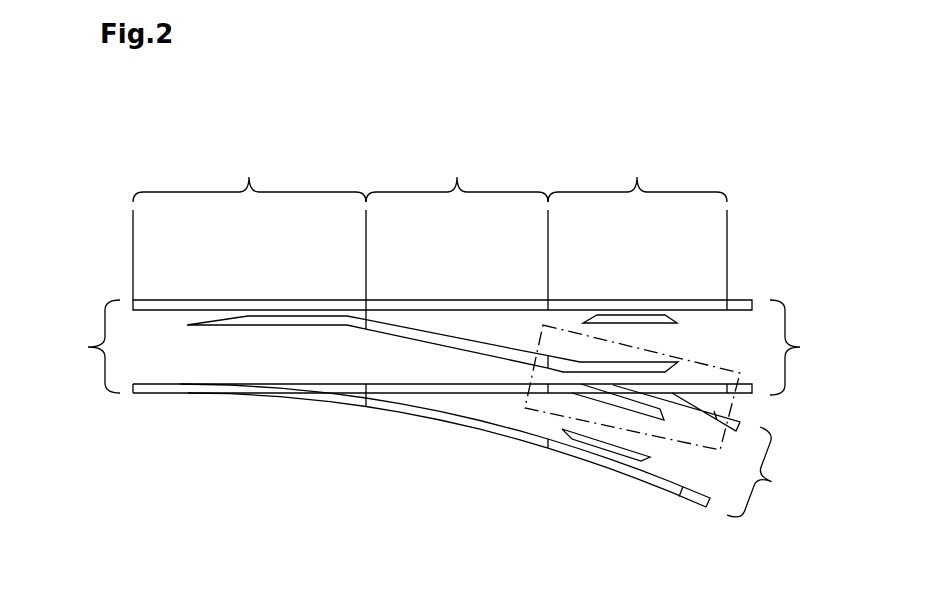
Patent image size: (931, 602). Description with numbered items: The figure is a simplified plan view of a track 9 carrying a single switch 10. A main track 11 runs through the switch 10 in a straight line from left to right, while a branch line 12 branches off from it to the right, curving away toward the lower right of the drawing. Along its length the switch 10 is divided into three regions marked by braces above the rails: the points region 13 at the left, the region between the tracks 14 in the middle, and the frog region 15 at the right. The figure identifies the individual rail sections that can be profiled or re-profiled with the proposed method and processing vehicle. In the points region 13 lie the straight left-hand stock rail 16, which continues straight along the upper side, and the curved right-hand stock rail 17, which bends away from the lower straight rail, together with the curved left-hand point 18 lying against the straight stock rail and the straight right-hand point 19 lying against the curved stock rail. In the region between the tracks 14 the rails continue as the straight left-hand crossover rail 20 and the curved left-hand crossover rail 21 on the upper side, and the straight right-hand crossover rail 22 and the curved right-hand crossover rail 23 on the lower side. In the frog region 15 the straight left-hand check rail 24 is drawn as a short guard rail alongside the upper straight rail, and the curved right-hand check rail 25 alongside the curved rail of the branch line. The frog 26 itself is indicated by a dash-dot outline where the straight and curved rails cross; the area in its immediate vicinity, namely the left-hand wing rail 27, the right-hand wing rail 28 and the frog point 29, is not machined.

The track 9 is at (84, 351).
The switch 10 is at (507, 110).
The main track 11 is at (808, 349).
The branch line 12 is at (777, 484).
The points region 13 is at (247, 172).
The region between the tracks 14 is at (456, 170).
The frog region 15 is at (637, 170).
The straight left-hand stock rail 16 is at (243, 303).
The curved right-hand stock rail 17 is at (232, 392).
The curved left-hand point 18 is at (291, 320).
The straight right-hand point 19 is at (320, 394).
The straight left-hand crossover rail 20 is at (454, 303).
The curved left-hand crossover rail 21 is at (481, 344).
The straight right-hand crossover rail 22 is at (442, 389).
The curved right-hand crossover rail 23 is at (492, 432).
The straight left-hand check rail 24 is at (628, 314).
The curved right-hand check rail 25 is at (609, 466).
The frog 26 is at (714, 365).
The left-hand wing rail 27 is at (564, 361).
The right-hand wing rail 28 is at (565, 389).
The frog point 29 is at (664, 396).